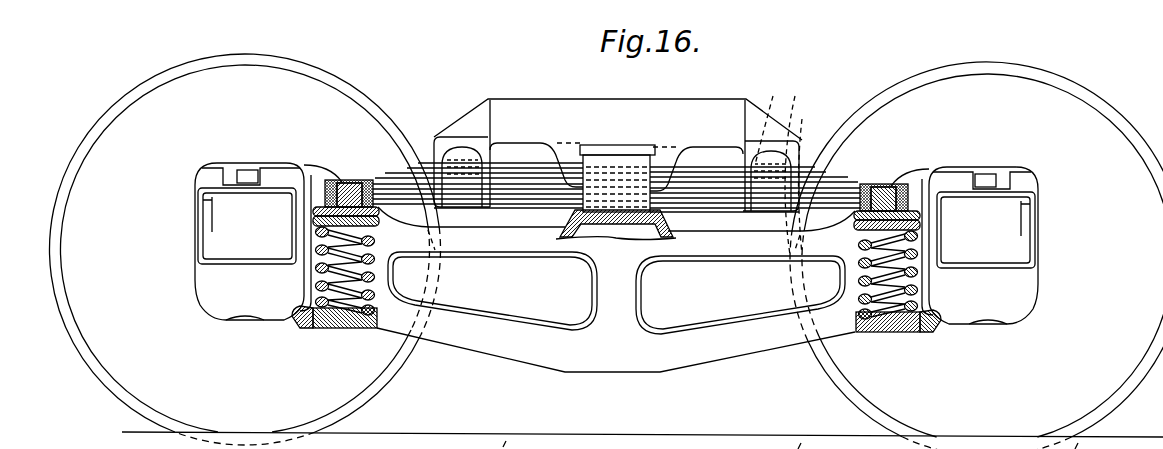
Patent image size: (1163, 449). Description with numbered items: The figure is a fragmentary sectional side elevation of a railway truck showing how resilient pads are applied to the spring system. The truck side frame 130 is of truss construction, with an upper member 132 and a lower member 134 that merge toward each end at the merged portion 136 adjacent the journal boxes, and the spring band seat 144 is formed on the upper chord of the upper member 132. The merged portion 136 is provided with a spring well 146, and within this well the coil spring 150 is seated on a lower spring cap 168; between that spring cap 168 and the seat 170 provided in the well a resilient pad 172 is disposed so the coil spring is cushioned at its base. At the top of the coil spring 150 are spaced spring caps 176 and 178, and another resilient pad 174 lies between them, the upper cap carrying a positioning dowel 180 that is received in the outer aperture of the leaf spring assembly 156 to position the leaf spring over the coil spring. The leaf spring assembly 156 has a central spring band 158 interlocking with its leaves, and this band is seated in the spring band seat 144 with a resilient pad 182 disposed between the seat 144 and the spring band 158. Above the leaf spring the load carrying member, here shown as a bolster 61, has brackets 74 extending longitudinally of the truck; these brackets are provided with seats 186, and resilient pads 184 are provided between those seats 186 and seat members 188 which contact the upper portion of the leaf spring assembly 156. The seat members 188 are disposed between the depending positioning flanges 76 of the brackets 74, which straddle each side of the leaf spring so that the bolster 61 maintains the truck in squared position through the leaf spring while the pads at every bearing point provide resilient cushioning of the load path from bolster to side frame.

The bolster 61 is at (554, 102).
The brackets 74 is at (474, 118).
The depending flanges 76 is at (748, 197).
The truck side frame 130 is at (531, 357).
The upper member 132 is at (469, 246).
The lower member 134 is at (432, 336).
The merged portion 136 is at (312, 297).
The spring band seat 144 is at (662, 217).
The spring well 146 is at (300, 314).
The coil spring 150 is at (316, 280).
The leaf spring assembly 156 is at (805, 200).
The spring band 158 is at (626, 161).
The spring cap 168 is at (813, 338).
The seat 170 is at (314, 331).
The resilient pad 172 is at (341, 330).
The resilient pad 174 is at (321, 200).
The spring cap 176 is at (318, 213).
The spring cap 178 is at (320, 219).
The positioning dowel 180 is at (352, 185).
The resilient pad 182 is at (606, 224).
The resilient pads 184 is at (807, 179).
The seats 186 is at (768, 122).
The seat members 188 is at (808, 167).